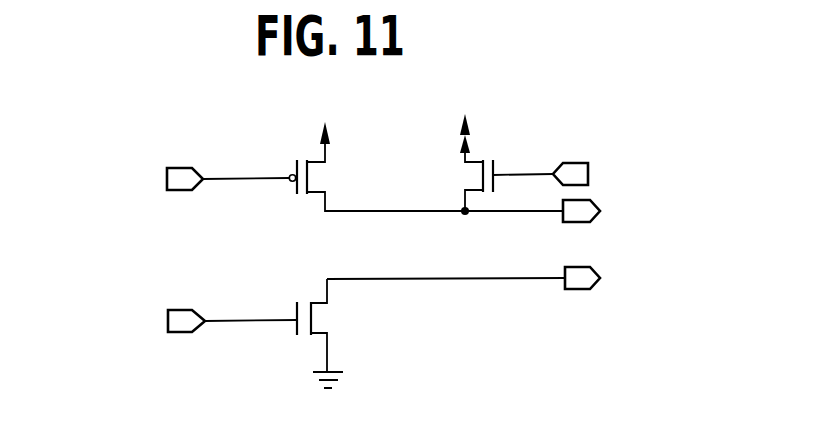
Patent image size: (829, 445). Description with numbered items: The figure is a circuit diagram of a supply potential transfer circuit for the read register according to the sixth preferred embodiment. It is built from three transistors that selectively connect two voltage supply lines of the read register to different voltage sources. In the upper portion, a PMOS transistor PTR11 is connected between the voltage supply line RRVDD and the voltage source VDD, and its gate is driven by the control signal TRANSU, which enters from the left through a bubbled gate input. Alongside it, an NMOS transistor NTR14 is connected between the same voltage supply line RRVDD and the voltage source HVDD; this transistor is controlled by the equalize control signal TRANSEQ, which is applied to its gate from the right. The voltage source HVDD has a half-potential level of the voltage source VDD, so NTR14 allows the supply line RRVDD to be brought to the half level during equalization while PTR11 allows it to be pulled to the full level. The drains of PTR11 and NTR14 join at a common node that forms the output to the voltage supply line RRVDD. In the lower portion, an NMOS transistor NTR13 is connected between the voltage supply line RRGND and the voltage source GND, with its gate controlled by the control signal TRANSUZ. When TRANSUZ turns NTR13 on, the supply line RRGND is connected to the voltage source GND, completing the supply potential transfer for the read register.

The PMOS transistor PTR11 is at (377, 176).
The NMOS transistor NTR14 is at (430, 172).
The NMOS transistor NTR13 is at (361, 325).
The control signal TRANSU is at (165, 180).
The control signal TRANSUZ is at (159, 321).
The equalize control signal TRANSEQ is at (614, 174).
The voltage supply line RRVDD is at (582, 210).
The voltage supply line RRGND is at (516, 278).
The voltage source VDD is at (324, 115).
The voltage source HVDD is at (505, 119).
The voltage source GND is at (357, 392).